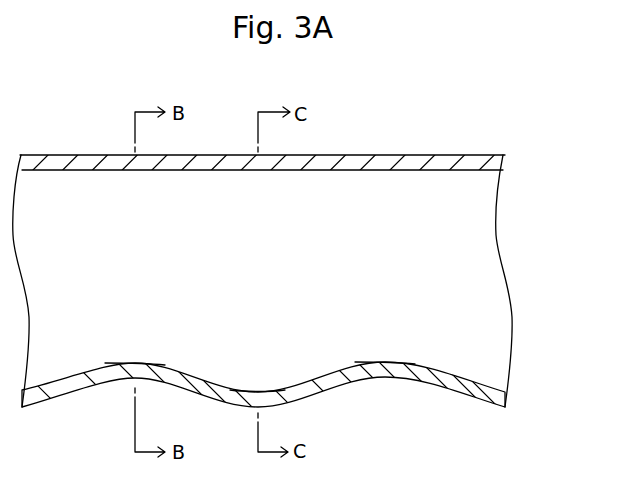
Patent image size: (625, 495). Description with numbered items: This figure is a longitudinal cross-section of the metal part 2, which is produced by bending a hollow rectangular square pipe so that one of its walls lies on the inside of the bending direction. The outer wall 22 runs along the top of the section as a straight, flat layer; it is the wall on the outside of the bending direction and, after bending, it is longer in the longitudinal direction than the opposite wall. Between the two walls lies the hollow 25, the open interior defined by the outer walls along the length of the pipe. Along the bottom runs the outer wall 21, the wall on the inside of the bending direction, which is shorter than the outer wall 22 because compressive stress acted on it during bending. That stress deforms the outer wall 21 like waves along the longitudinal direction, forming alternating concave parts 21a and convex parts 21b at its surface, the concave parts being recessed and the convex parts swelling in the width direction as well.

The metal part 2 is at (543, 103).
The outer wall 21 is at (458, 385).
The concave part 21a is at (137, 371).
The convex part 21b is at (258, 397).
The outer wall 22 is at (390, 170).
The hollow 25 is at (497, 277).